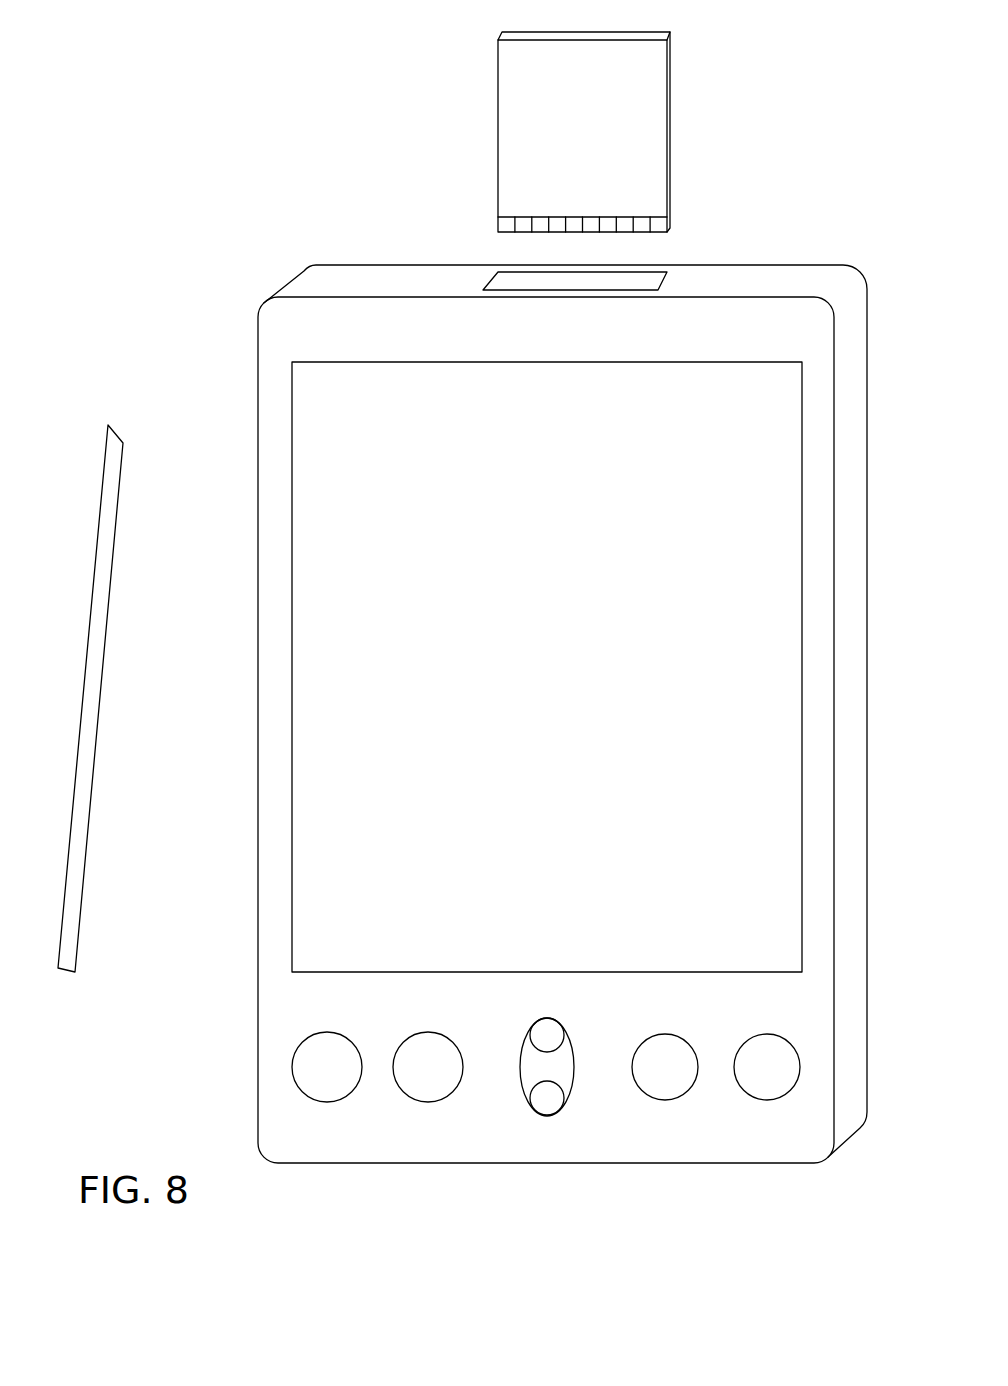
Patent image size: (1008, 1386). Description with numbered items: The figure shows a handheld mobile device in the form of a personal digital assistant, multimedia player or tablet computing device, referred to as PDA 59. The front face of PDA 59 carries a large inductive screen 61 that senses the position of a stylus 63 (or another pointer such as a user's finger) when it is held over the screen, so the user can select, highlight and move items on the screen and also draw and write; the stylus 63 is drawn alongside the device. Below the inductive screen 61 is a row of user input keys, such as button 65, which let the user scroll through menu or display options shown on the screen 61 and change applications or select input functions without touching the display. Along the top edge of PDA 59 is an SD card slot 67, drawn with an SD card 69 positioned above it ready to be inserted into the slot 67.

The personal digital assistant 59 is at (505, 679).
The inductive screen 61 is at (512, 661).
The stylus 63 is at (75, 972).
The button 65 is at (310, 1060).
The SD card slot 67 is at (583, 290).
The SD card 69 is at (498, 138).